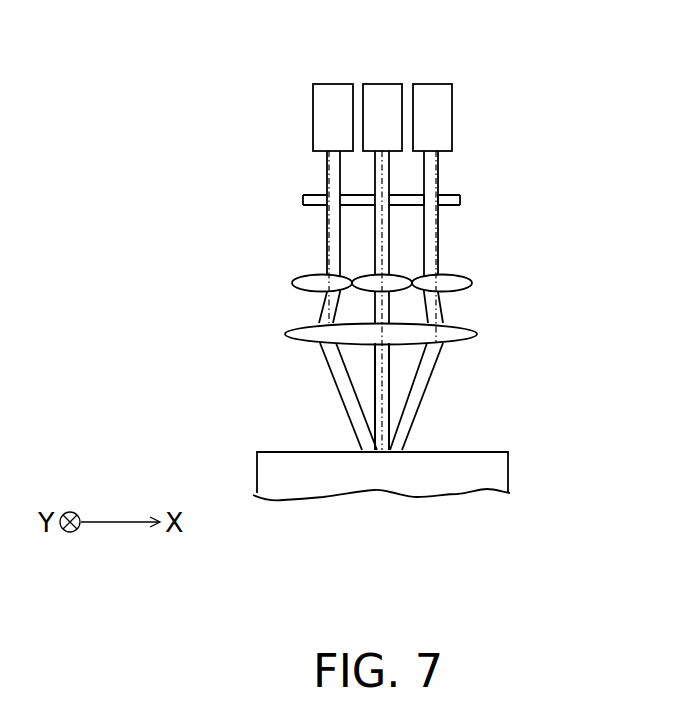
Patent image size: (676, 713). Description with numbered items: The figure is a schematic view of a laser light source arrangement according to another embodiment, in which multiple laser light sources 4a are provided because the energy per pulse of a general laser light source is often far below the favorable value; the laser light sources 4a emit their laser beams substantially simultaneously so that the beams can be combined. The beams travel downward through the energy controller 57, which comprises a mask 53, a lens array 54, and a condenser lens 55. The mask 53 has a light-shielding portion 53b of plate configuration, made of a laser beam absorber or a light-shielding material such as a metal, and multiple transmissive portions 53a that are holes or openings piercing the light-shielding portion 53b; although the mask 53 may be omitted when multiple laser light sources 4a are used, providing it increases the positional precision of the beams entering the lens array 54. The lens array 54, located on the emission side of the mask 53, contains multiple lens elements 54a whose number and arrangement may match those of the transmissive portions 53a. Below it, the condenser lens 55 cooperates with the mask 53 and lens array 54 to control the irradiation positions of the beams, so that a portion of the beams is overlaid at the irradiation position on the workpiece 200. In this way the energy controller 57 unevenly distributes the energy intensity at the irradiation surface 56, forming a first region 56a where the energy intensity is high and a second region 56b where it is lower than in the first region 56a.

The laser light source 4a is at (438, 95).
The mask 53 is at (468, 147).
The transmissive portion 53a is at (434, 192).
The light-shielding portion 53b is at (455, 195).
The lens array 54 is at (453, 239).
The lens element 54a is at (462, 271).
The condenser lens 55 is at (472, 327).
The irradiation surface 56 is at (414, 439).
The first region 56a is at (382, 453).
The second region 56b is at (395, 453).
The energy controller 57 is at (254, 204).
The workpiece 200 is at (468, 473).